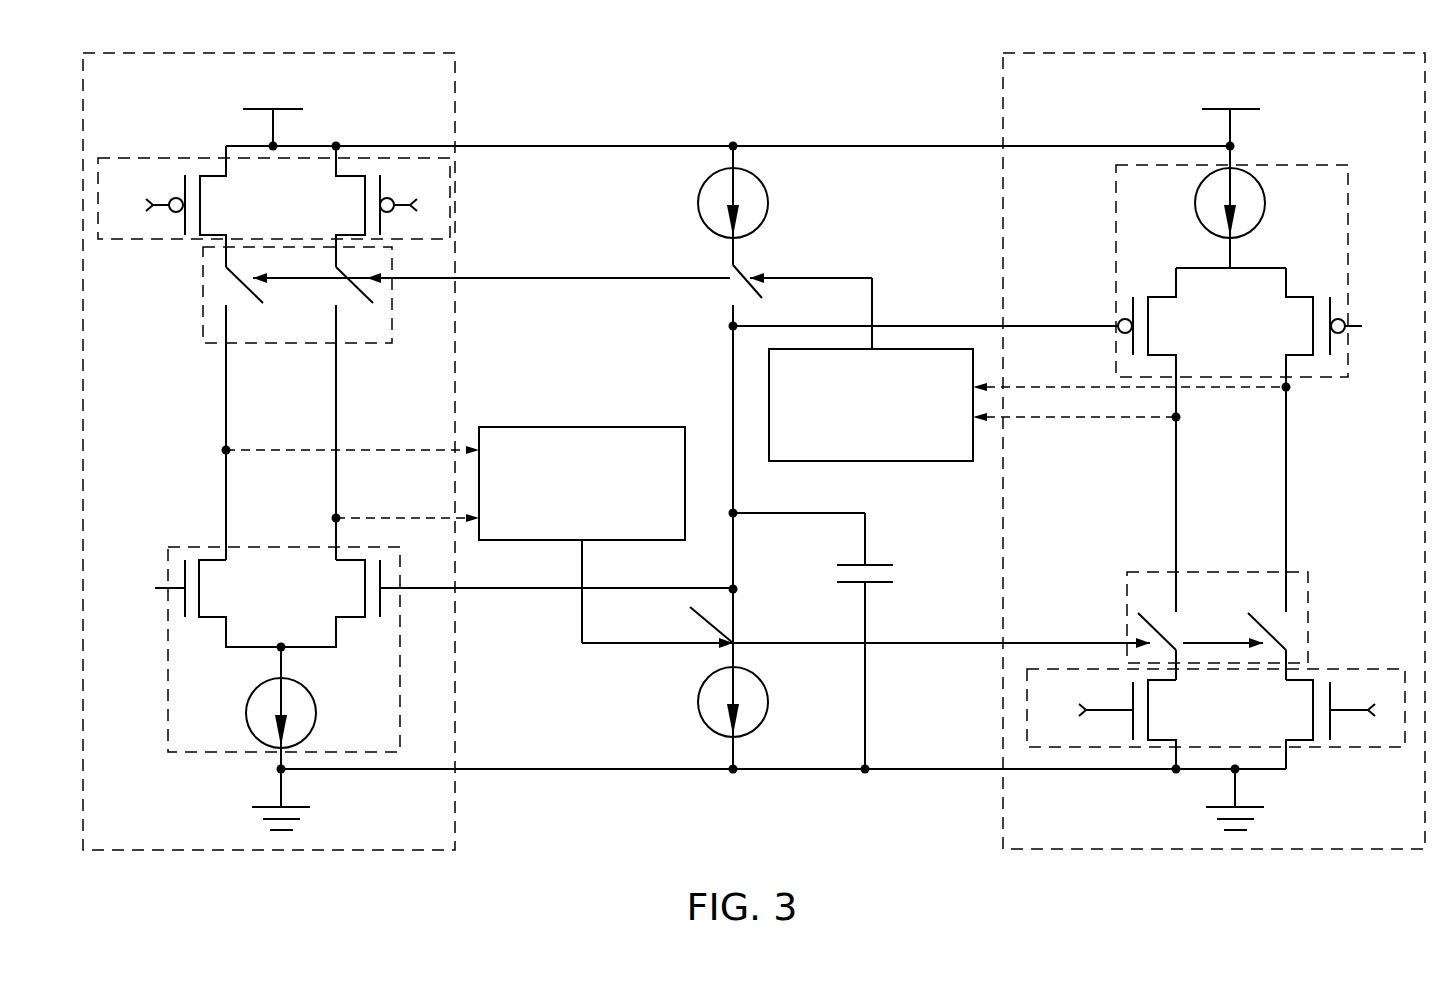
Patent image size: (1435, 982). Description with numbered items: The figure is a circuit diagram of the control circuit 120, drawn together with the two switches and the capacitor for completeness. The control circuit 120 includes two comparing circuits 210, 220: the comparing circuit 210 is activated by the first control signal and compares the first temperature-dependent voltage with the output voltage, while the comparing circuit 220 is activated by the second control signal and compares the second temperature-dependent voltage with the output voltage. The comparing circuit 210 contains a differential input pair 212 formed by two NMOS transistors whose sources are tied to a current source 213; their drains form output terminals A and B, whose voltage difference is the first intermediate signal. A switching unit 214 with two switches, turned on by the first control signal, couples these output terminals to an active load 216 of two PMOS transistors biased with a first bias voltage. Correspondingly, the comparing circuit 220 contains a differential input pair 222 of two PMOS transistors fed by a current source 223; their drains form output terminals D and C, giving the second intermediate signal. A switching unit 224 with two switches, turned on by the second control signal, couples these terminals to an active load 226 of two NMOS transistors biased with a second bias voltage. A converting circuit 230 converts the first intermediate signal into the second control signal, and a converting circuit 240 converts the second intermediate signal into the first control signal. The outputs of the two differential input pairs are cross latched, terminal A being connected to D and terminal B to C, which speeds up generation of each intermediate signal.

The control circuit 120 is at (968, 66).
The comparing circuit 210 is at (456, 112).
The comparing circuit 220 is at (1003, 112).
The differential input pair 212 is at (188, 547).
The current source 213 is at (316, 708).
The switching unit 214 is at (203, 305).
The active load 216 is at (170, 158).
The differential input pair 222 is at (1325, 380).
The current source 223 is at (1262, 182).
The switching unit 224 is at (1308, 592).
The active load 226 is at (1355, 748).
The converting circuit 230 is at (565, 531).
The converting circuit 240 is at (854, 451).